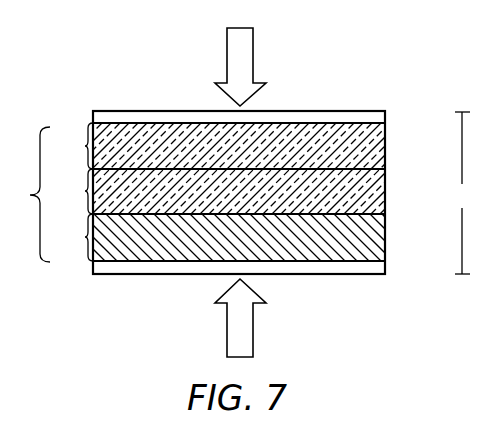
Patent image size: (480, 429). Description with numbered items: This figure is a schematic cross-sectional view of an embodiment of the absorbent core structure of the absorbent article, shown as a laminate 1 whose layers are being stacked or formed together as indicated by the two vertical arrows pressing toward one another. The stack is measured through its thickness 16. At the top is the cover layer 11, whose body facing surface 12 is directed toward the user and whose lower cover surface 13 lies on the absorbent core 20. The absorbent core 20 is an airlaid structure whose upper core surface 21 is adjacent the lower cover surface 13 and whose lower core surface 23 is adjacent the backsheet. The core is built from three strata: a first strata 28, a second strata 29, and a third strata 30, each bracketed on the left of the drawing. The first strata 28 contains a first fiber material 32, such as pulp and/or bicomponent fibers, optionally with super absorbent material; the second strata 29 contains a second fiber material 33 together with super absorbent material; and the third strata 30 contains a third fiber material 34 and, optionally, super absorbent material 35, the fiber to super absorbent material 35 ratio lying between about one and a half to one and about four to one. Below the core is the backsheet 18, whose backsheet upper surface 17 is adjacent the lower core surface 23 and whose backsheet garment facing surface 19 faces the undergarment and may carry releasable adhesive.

The laminate body 1 is at (286, 208).
The cover layer 11 is at (312, 118).
The body facing surface 12 is at (365, 110).
The lower cover surface 13 is at (385, 126).
The thickness 16 is at (463, 193).
The backsheet upper surface 17 is at (373, 252).
The backsheet 18 is at (295, 268).
The backsheet garment facing surface 19 is at (356, 274).
The absorbent core 20 is at (235, 192).
The upper core surface 21 is at (143, 123).
The lower core surface 23 is at (150, 263).
The first strata 28 is at (221, 146).
The second strata 29 is at (221, 191).
The third strata 30 is at (220, 237).
The first fiber material 32 is at (360, 142).
The second fiber material 33 is at (350, 195).
The third fiber material 34 is at (347, 237).
The super absorbent material 35 is at (263, 238).